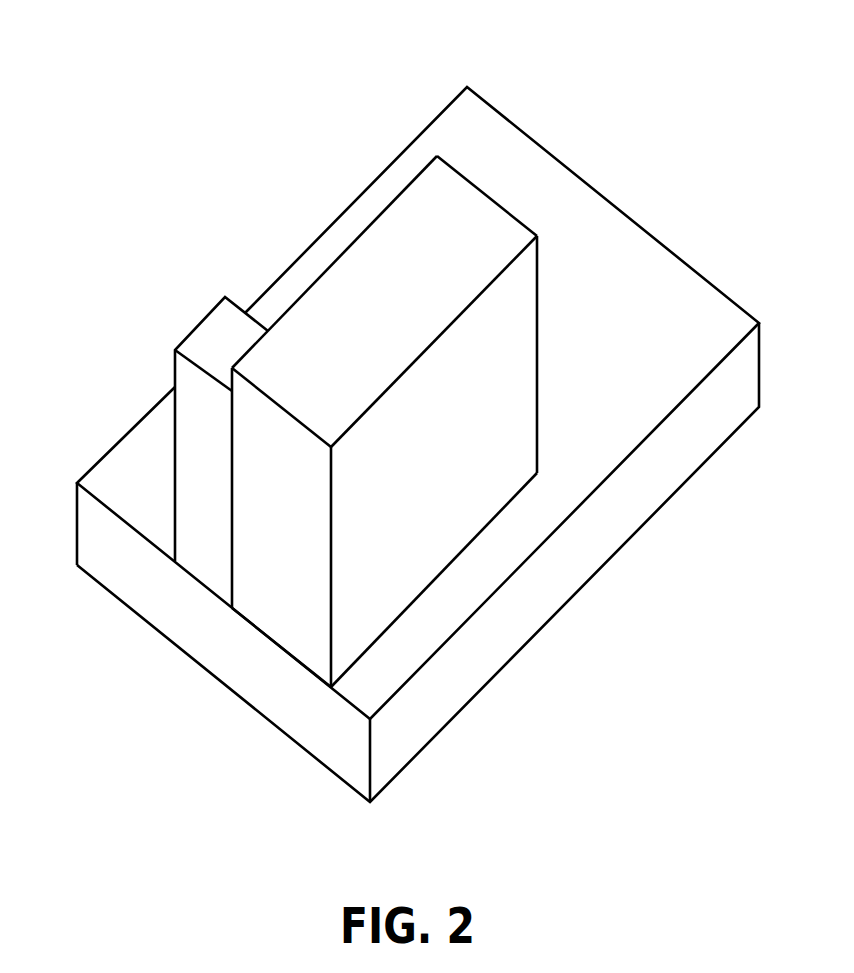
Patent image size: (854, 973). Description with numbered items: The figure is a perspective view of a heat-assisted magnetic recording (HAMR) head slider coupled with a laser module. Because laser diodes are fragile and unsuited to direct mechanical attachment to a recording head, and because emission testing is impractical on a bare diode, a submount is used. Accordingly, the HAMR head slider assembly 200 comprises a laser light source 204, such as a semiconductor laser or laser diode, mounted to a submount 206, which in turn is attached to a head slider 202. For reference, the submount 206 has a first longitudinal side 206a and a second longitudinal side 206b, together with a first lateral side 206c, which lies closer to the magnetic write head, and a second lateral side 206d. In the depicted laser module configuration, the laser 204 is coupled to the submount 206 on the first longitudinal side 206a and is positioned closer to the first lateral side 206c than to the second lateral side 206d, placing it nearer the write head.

The HAMR head slider assembly 200 is at (212, 93).
The head slider 202 is at (688, 361).
The laser light source 204 is at (217, 338).
The submount 206 is at (392, 323).
The first longitudinal side 206a is at (327, 262).
The second longitudinal side 206b is at (463, 550).
The first lateral side 206c is at (282, 650).
The second lateral side 206d is at (485, 192).